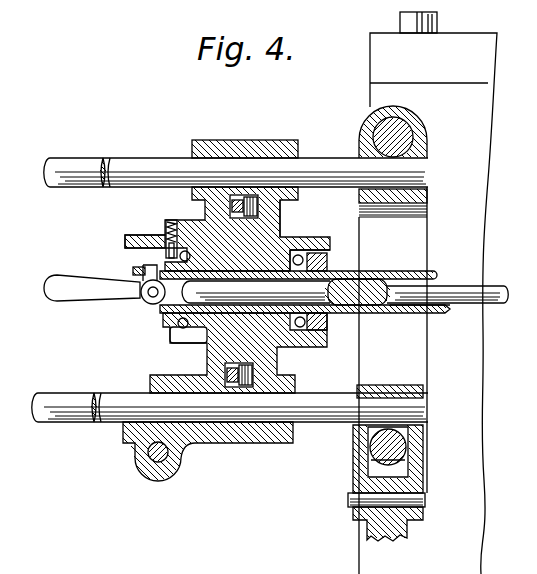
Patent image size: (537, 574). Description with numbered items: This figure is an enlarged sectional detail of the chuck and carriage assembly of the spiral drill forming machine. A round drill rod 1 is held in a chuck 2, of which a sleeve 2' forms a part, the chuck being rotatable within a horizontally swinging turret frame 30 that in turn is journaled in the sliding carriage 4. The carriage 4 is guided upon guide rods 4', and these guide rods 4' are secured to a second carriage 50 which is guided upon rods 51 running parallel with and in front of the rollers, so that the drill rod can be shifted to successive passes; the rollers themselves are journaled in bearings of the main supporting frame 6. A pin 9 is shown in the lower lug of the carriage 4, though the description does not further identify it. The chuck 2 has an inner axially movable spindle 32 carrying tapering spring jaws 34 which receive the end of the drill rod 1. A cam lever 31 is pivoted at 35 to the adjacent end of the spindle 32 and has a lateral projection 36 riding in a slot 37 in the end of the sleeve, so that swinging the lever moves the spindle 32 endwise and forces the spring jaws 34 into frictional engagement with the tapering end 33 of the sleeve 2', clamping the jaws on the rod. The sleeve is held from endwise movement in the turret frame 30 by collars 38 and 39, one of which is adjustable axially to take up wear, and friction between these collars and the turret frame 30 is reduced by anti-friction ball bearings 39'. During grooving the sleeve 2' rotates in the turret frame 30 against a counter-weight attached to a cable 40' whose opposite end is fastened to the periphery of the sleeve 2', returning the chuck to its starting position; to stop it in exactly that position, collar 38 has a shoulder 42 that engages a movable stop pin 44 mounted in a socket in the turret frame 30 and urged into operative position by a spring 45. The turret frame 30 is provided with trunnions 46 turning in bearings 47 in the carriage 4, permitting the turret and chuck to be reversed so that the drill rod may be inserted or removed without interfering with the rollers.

The drill rod 1 is at (490, 303).
The chuck 2 is at (305, 326).
The sleeve 2' is at (298, 260).
The carriage 4 is at (230, 267).
The guide rods 4' is at (100, 293).
The main supporting frame 6 is at (473, 100).
The pivot pin 9 is at (157, 460).
The turret frame 30 is at (282, 236).
The cam lever 31 is at (70, 294).
The spindle 32 is at (296, 289).
The tapering end of sleeve 33 is at (443, 310).
The tapering spring jaws 34 is at (437, 295).
The pivot 35 is at (153, 297).
The lateral projection 36 is at (147, 267).
The slot 37 is at (133, 270).
The collar 38 is at (178, 320).
The collar 39 is at (324, 308).
The anti-friction ball bearings 39' is at (262, 318).
The cable 40' is at (219, 218).
The shoulder 42 is at (145, 237).
The stop pin 44 is at (167, 232).
The spring 45 is at (172, 250).
The trunnions 46 is at (252, 196).
The bearings 47 is at (236, 196).
The second carriage 50 is at (430, 197).
The rods 51 is at (400, 143).